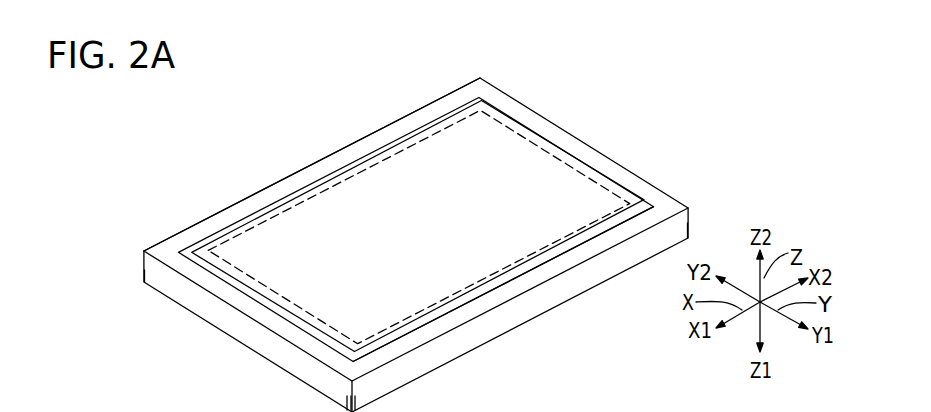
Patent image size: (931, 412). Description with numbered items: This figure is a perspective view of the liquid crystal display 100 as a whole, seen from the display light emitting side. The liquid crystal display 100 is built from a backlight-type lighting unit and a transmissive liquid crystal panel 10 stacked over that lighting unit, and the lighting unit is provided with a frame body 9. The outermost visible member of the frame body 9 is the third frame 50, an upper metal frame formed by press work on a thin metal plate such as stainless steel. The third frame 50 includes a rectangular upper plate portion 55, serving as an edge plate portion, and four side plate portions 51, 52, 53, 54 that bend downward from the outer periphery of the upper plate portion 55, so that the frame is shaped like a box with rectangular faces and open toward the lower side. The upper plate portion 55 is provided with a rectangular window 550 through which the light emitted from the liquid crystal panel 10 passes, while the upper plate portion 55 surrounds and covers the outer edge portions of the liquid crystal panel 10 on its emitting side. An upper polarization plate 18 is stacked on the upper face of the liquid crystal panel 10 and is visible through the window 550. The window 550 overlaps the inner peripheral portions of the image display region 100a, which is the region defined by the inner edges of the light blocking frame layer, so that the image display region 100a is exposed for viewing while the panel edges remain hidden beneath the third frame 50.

The liquid crystal display 100 is at (164, 104).
The image display region 100a is at (447, 305).
The third frame 50 is at (523, 91).
The frame body 9 is at (419, 209).
The side plate portion 54 is at (646, 179).
The upper plate portion 55 is at (603, 163).
The window 550 is at (557, 143).
The side plate portion 51 is at (553, 290).
The side plate portion 52 is at (208, 217).
The side plate portion 53 is at (235, 327).
The upper polarization plate 18 is at (432, 157).
The liquid crystal panel 10 is at (337, 200).